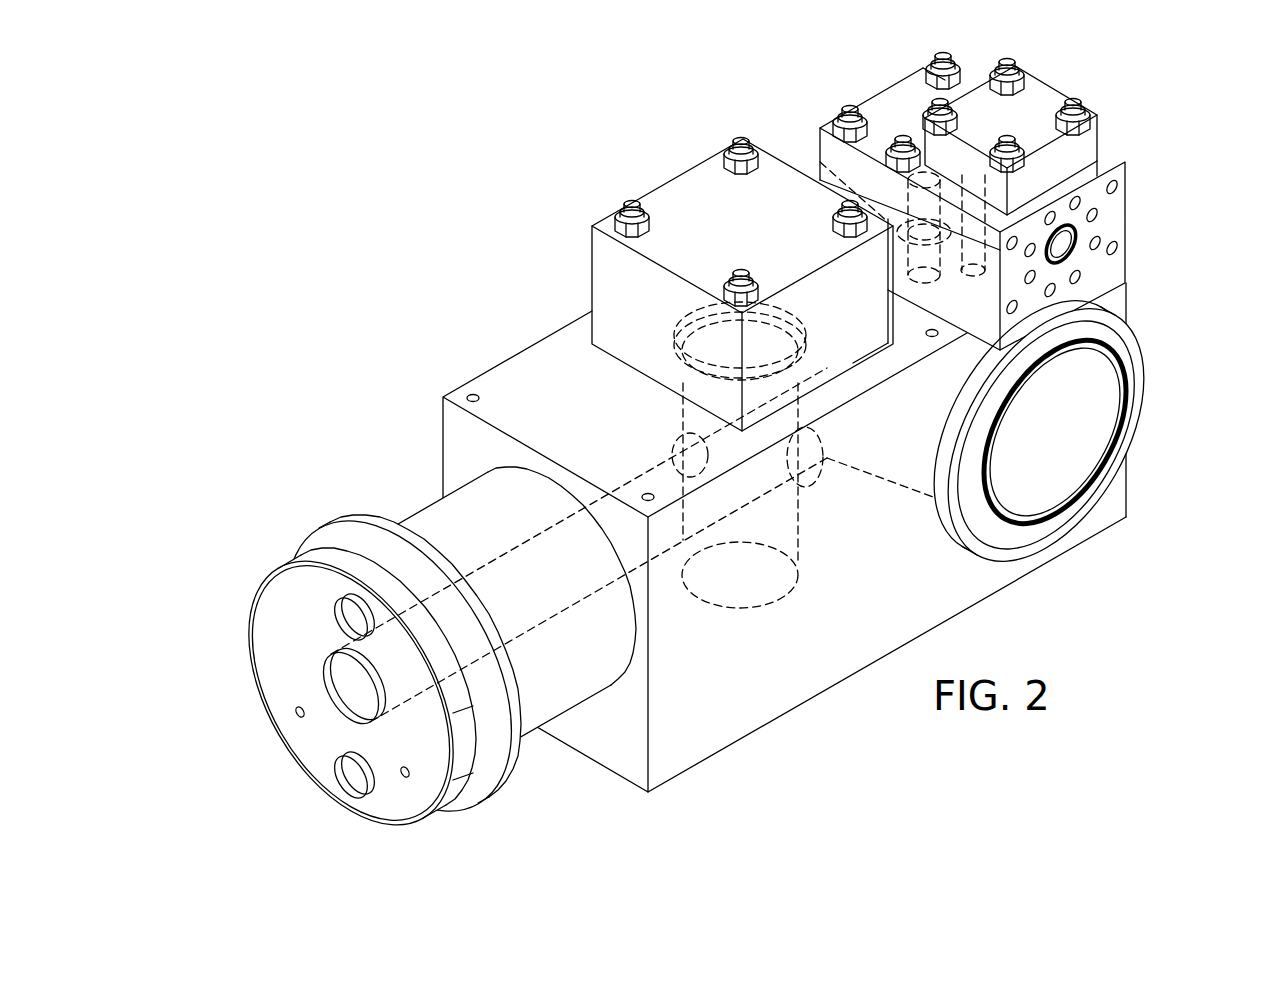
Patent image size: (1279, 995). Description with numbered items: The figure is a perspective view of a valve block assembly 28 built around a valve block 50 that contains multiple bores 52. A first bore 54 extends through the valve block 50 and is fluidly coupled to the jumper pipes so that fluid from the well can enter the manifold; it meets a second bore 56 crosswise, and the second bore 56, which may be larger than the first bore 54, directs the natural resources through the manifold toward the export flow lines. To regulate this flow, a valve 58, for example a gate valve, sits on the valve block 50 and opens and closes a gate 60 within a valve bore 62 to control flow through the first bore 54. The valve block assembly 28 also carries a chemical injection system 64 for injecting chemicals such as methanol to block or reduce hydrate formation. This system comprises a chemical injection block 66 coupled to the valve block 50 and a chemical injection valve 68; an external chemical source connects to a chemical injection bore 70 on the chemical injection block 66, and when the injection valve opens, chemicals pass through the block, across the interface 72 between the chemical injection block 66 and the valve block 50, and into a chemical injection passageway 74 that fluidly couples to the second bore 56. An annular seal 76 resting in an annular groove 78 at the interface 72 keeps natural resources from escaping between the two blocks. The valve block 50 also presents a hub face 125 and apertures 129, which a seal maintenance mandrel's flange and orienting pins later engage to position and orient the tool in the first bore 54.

The valve block assembly 28 is at (717, 447).
The valve block 50 is at (890, 657).
The bores 52 is at (843, 537).
The first bore 54 is at (681, 548).
The second bore 56 is at (1115, 388).
The valve 58 is at (612, 277).
The gate 60 is at (668, 390).
The valve bore 62 is at (812, 549).
The chemical injection system 64 is at (1018, 221).
The chemical injection block 66 is at (893, 98).
The chemical injection valve 68 is at (1033, 92).
The chemical injection bore 70 is at (1067, 240).
The interface 72 is at (923, 315).
The chemical injection passageway 74 is at (900, 268).
The seal 76 is at (820, 162).
The groove 78 is at (965, 245).
The hub face 125 is at (427, 648).
The apertures 129 is at (300, 716).